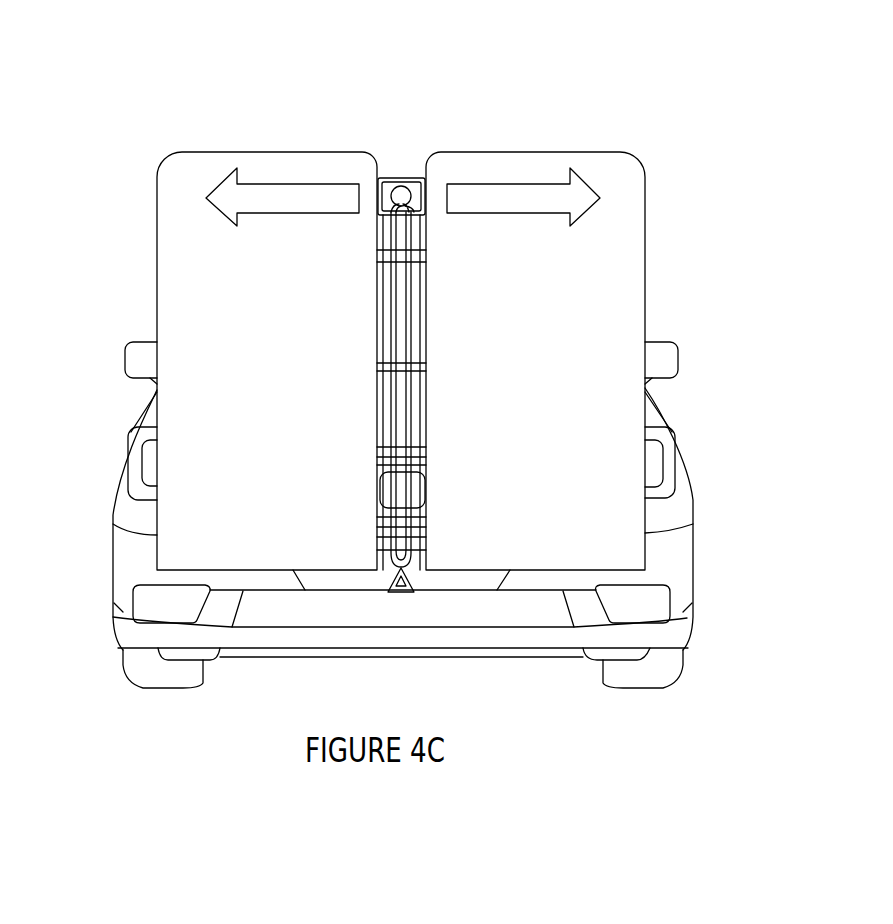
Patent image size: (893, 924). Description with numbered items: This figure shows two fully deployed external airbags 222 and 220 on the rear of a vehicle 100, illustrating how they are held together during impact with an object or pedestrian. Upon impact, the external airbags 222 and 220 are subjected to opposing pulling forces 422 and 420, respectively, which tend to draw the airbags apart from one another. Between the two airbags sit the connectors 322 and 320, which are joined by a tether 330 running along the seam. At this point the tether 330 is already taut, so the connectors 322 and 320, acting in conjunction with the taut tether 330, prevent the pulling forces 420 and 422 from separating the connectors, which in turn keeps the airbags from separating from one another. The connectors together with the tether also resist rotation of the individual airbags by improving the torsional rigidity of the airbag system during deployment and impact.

The vehicle 100 is at (121, 627).
The external airbag 220 is at (630, 322).
The external airbag 222 is at (173, 293).
The connector 320 is at (417, 176).
The connector 322 is at (386, 176).
The tether 330 is at (413, 303).
The pulling force 420 is at (517, 184).
The pulling force 422 is at (293, 182).